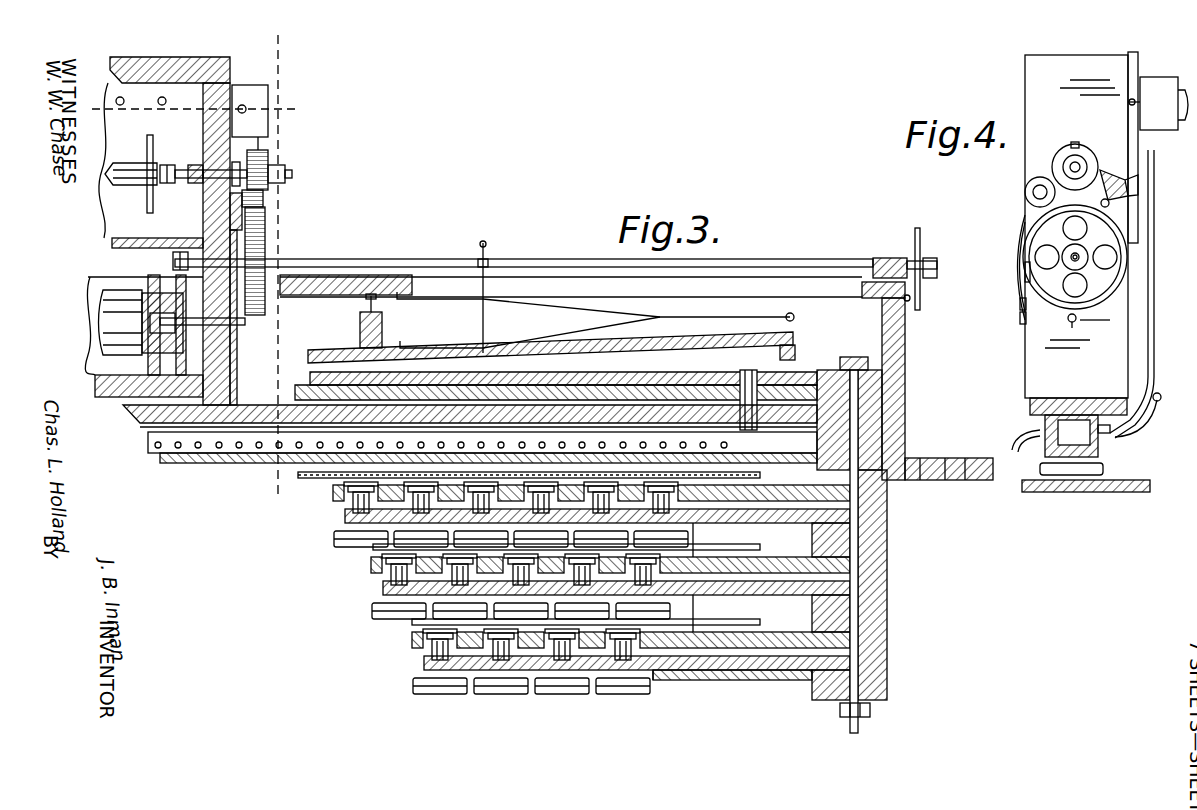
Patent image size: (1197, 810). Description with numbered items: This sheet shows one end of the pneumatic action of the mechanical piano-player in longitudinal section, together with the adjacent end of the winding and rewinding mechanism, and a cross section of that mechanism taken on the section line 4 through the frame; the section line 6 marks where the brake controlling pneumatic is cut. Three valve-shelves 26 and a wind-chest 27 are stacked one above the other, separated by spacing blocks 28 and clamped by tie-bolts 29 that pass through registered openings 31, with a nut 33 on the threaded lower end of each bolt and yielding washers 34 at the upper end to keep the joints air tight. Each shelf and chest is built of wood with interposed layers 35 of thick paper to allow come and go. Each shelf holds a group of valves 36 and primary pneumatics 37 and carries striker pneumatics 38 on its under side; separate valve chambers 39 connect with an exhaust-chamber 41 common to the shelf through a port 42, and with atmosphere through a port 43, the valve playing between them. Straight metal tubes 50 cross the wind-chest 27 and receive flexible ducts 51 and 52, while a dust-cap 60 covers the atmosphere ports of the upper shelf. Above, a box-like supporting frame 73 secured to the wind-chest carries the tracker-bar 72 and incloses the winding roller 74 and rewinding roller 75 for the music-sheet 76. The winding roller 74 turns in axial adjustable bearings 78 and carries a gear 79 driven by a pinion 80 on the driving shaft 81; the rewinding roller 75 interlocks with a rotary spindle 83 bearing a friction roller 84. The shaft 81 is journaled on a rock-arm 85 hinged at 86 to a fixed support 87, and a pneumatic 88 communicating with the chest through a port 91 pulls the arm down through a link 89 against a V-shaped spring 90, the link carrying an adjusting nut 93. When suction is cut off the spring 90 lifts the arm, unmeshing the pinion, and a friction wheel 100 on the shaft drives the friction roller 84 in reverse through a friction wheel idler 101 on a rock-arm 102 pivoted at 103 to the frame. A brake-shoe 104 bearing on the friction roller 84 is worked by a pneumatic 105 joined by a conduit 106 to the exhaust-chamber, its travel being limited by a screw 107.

In FIG. 3, the section line 4- 4 is at (273, 273).
In FIG. 3, the section line 6- 6 is at (195, 109).
In FIG. 3, the valve-shelves 26 is at (725, 505).
In FIG. 4, the valve-shelves 26 is at (1060, 492).
In FIG. 3, the wind-chest 27 is at (232, 412).
In FIG. 4, the wind-chest 27 is at (1045, 410).
In FIG. 3, the spacing blocks 28 is at (887, 472).
In FIG. 3, the tie-bolts 29 is at (888, 540).
In FIG. 3, the registered openings 31 is at (865, 630).
In FIG. 3, the nut 33 is at (868, 710).
In FIG. 4, the nut 33 is at (1074, 432).
In FIG. 3, the yielding washers 34 is at (848, 366).
In FIG. 3, the interposed layers 35 is at (340, 505).
In FIG. 4, the interposed layers 35 is at (1076, 415).
In FIG. 3, the valves 36 is at (362, 500).
In FIG. 3, the primary pneumatics 37 is at (388, 535).
In FIG. 3, the striker pneumatics 38 is at (512, 494).
In FIG. 3, the valve chambers 39 is at (338, 495).
In FIG. 3, the exhaust-chamber 41 is at (750, 505).
In FIG. 3, the port 42 is at (388, 472).
In FIG. 3, the port 43 is at (662, 490).
In FIG. 3, the metal tubes 50 is at (268, 452).
In FIG. 4, the metal tubes 50 is at (1100, 447).
In FIG. 4, the flexible ducts 51 is at (1024, 453).
In FIG. 4, the flexible ducts 52 is at (1158, 412).
In FIG. 3, the dust-cap 60 is at (307, 476).
In FIG. 4, the dust-cap 60 is at (1105, 468).
In FIG. 4, the tracker-bar 72 is at (1018, 250).
In FIG. 3, the supporting frame 73 is at (225, 82).
In FIG. 4, the supporting frame 73 is at (1038, 88).
In FIG. 3, the winding roller 74 is at (120, 325).
In FIG. 4, the winding roller 74 is at (1024, 320).
In FIG. 3, the rewinding roller 75 is at (132, 168).
In FIG. 4, the music-sheet 76 is at (1030, 270).
In FIG. 3, the axial adjustable bearings 78 is at (237, 330).
In FIG. 4, the axial adjustable bearings 78 is at (1070, 334).
In FIG. 3, the gear 79 is at (176, 290).
In FIG. 4, the gear 79 is at (1023, 305).
In FIG. 3, the pinion 80 is at (181, 252).
In FIG. 3, the driving shaft 81 is at (430, 259).
In FIG. 4, the driving shaft 81 is at (1068, 262).
In FIG. 3, the rotary spindle 83 is at (193, 165).
In FIG. 4, the rotary spindle 83 is at (1078, 162).
In FIG. 3, the friction roller 84 is at (270, 153).
In FIG. 4, the friction roller 84 is at (1058, 153).
In FIG. 3, the rock-arm 85 is at (550, 290).
In FIG. 3, the hinge 86 is at (912, 298).
In FIG. 3, the fixed support 87 is at (905, 353).
In FIG. 3, the pneumatic 88 is at (728, 372).
In FIG. 3, the link 89 is at (488, 320).
In FIG. 3, the spring 90 is at (466, 320).
In FIG. 3, the port 91 is at (757, 388).
In FIG. 3, the adjusting nut 93 is at (488, 265).
In FIG. 3, the friction wheel 100 is at (263, 235).
In FIG. 4, the friction wheel 100 is at (1128, 257).
In FIG. 4, the friction wheel idler 101 is at (1033, 192).
In FIG. 4, the rock-arm 102 is at (1030, 182).
In FIG. 4, the pivot 103 is at (1110, 205).
In FIG. 3, the brake-shoe 104 is at (265, 200).
In FIG. 4, the brake-shoe 104 is at (1130, 184).
In FIG. 3, the pneumatic 105 is at (262, 97).
In FIG. 4, the pneumatic 105 is at (1158, 87).
In FIG. 4, the conduit 106 is at (1154, 315).
In FIG. 3, the screw 107 is at (243, 105).
In FIG. 4, the screw 107 is at (1129, 102).